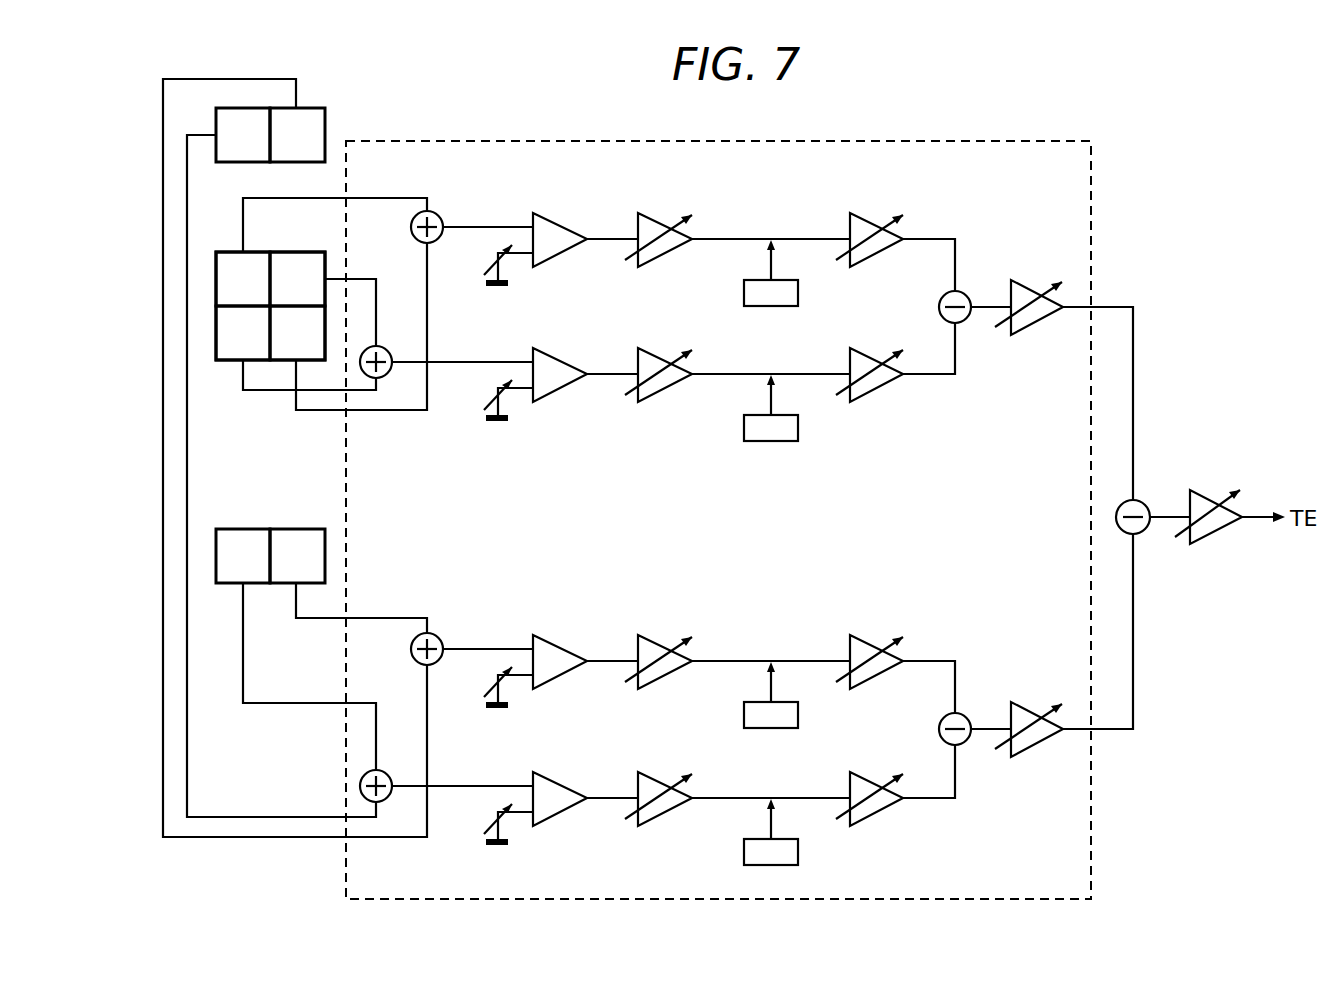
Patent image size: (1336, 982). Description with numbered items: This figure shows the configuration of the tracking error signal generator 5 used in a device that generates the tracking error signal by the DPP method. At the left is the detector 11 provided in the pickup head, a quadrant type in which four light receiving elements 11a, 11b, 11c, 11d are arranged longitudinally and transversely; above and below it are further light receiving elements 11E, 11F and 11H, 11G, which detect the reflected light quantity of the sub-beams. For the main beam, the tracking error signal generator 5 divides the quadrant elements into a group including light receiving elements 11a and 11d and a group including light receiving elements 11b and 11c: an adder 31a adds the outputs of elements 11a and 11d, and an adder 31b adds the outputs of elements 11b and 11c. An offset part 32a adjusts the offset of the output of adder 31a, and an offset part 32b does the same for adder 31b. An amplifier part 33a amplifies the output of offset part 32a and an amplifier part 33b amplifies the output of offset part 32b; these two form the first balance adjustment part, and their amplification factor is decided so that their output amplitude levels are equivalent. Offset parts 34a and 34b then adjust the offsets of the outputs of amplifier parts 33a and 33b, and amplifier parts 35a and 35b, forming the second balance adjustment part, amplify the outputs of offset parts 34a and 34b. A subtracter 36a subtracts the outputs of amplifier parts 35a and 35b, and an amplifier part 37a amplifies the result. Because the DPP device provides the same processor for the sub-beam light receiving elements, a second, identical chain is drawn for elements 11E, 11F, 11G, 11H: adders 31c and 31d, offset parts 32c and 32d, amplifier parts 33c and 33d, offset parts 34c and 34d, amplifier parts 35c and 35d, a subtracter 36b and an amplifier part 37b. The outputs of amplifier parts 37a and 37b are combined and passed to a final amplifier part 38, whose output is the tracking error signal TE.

The tracking error signal generator 5 is at (992, 141).
The detector 11 is at (286, 252).
The light receiving element 11a is at (243, 279).
The light receiving element 11b is at (297, 279).
The light receiving element 11c is at (297, 333).
The light receiving element 11d is at (243, 333).
The side beam light receiving region 11E is at (243, 135).
The side beam light receiving region 11F is at (297, 135).
The side beam light receiving region 11G is at (297, 556).
The side beam light receiving region 11H is at (243, 556).
The adder 31a is at (439, 212).
The adder 31b is at (390, 347).
The adder 31c is at (439, 634).
The adder 31d is at (390, 771).
The offset part 32a is at (555, 219).
The offset part 32b is at (555, 354).
The differential amplifier 32c is at (555, 641).
The differential amplifier 32d is at (555, 778).
The amplifier part 33a is at (661, 219).
The amplifier part 33b is at (661, 354).
The variable gain amplifier 33c is at (661, 641).
The variable gain amplifier 33d is at (661, 778).
The offset part 34a is at (742, 284).
The offset part 34b is at (742, 419).
The gain control circuit 34c is at (742, 706).
The gain control circuit 34d is at (742, 843).
The amplifier part 35a is at (872, 219).
The amplifier part 35b is at (872, 354).
The variable gain amplifier 35c is at (872, 641).
The variable gain amplifier 35d is at (872, 778).
The subtractor 36a is at (970, 291).
The subtractor 36b is at (970, 713).
The variable gain amplifier 37a is at (1033, 283).
The variable gain amplifier 37b is at (1033, 705).
The variable gain amplifier 38 is at (1215, 496).